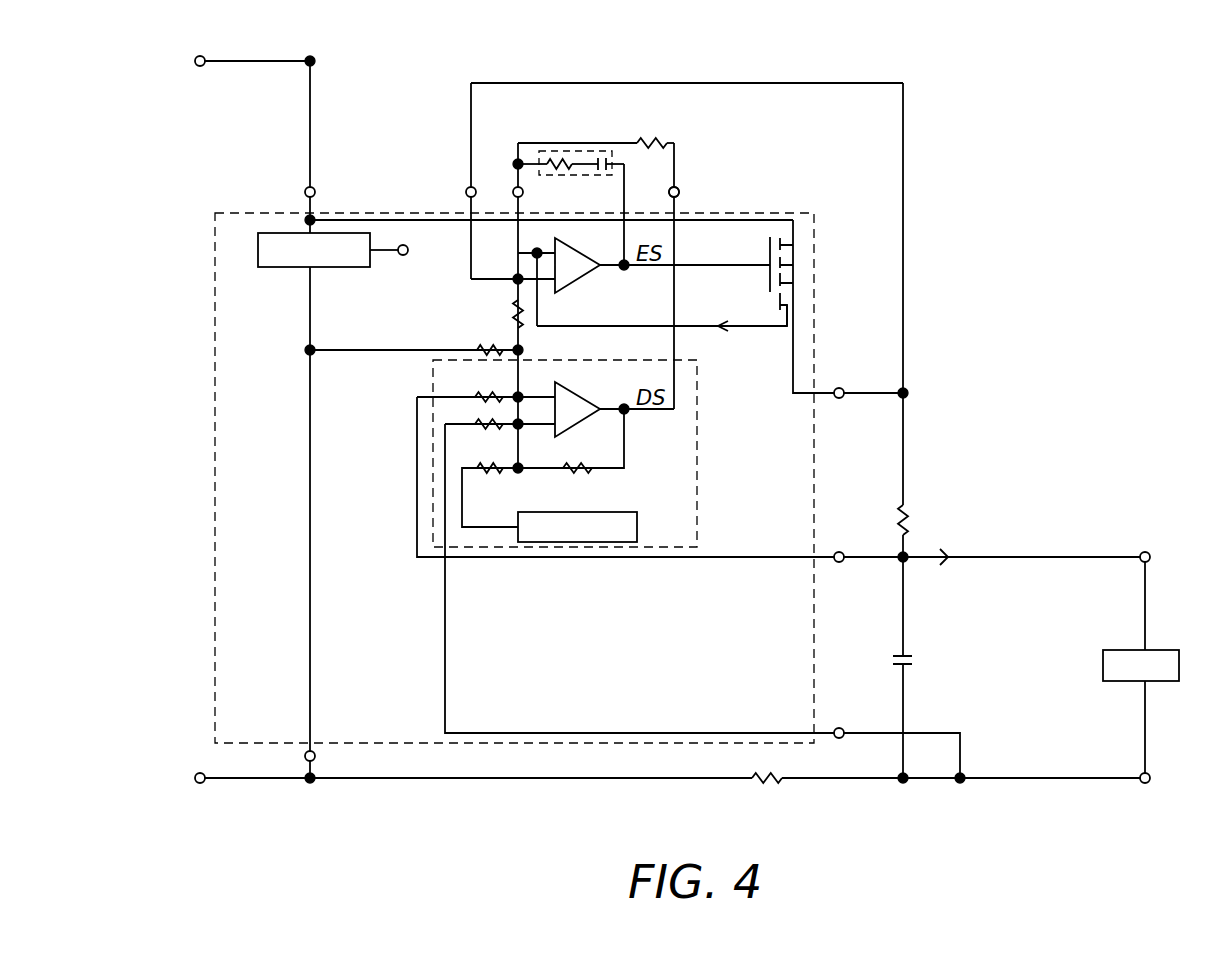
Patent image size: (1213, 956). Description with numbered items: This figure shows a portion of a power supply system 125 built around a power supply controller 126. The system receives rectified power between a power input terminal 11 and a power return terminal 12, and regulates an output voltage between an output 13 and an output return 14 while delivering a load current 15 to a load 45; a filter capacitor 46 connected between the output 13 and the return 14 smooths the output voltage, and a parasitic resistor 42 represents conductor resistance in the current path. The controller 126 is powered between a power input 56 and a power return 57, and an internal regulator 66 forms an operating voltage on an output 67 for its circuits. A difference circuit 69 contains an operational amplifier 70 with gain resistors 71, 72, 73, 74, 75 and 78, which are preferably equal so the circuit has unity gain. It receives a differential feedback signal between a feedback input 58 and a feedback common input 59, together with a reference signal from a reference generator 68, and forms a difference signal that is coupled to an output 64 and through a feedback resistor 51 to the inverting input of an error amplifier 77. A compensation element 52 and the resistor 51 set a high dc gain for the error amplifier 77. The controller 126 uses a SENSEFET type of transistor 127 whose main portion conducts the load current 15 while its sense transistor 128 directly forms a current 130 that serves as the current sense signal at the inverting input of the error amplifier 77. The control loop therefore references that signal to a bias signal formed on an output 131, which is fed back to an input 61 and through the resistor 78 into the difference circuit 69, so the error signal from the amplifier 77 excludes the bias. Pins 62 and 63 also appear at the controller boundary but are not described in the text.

The power input terminal 11 is at (203, 57).
The power return terminal 12 is at (201, 772).
The output 13 is at (1145, 551).
The output return 14 is at (1151, 778).
The load current 15 is at (946, 562).
The parasitic resistor 42 is at (910, 511).
The load 45 is at (1125, 683).
The filter capacitor 46 is at (906, 668).
The feedback resistor 51 is at (650, 147).
The compensation element 52 is at (552, 177).
The power input 56 is at (316, 192).
The power return 57 is at (316, 756).
The feedback input 58 is at (841, 563).
The feedback common input 59 is at (841, 728).
The input 61 is at (465, 192).
The pin 62 is at (512, 192).
The pin 63 is at (678, 188).
The output 64 is at (680, 190).
The internal regulator 66 is at (283, 268).
The output 67 is at (405, 256).
The reference generator 68 is at (638, 527).
The difference circuit 69 is at (698, 466).
The operational amplifier 70 is at (580, 424).
The resistor 71 is at (488, 421).
The resistor 72 is at (485, 472).
The resistor 73 is at (574, 472).
The resistor 74 is at (490, 392).
The resistor 75 is at (497, 350).
The error amplifier 77 is at (579, 279).
The resistor 78 is at (516, 305).
The power supply system 125 is at (808, 827).
The power supply controller 126 is at (815, 662).
The SENSEFET type of transistor 127 is at (769, 254).
The sense transistor 128 is at (773, 329).
The current 130 is at (720, 330).
The output 131 is at (842, 387).